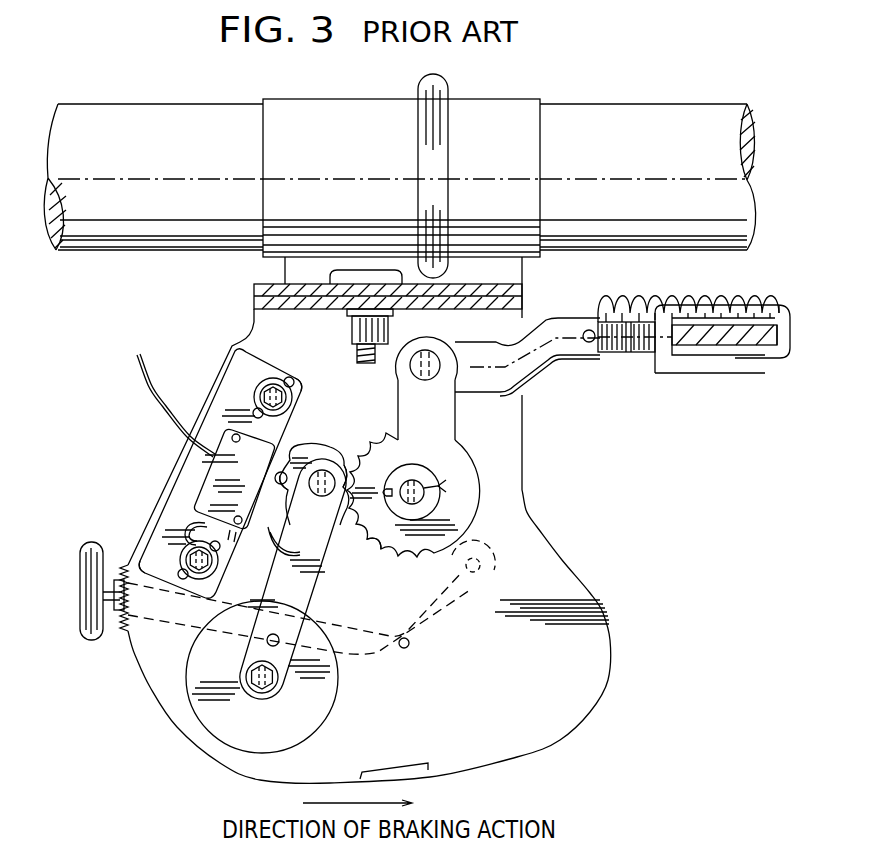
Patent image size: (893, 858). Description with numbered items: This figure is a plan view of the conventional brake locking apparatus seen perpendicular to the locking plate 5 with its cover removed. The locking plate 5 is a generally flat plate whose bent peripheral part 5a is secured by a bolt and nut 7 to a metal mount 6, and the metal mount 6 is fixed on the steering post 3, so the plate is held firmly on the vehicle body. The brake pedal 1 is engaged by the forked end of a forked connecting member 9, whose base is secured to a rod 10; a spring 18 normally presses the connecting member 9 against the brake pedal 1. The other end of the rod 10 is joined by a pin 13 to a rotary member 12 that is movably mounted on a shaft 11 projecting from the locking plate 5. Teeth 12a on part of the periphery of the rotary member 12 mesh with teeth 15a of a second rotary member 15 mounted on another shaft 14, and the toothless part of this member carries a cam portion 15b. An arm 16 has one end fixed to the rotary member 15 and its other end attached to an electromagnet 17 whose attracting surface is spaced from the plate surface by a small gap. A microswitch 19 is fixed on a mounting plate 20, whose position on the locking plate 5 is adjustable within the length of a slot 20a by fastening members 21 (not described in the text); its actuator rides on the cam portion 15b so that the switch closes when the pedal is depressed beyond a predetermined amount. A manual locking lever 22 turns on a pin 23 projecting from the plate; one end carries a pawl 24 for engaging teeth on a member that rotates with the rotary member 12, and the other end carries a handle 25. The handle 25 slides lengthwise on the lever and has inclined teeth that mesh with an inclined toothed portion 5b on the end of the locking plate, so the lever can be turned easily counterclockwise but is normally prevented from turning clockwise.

The brake pedal 1 is at (706, 345).
The steering post 3 is at (180, 113).
The locking plate 5 is at (590, 698).
The part of bent portion 5a is at (254, 303).
The serrated edge 5b is at (125, 633).
The metal mount 6 is at (507, 107).
The bolt and nut 7 is at (345, 335).
The forked connecting member 9 is at (662, 360).
The rod 10 is at (560, 332).
The shaft 11 is at (424, 494).
The rotary member 12 is at (457, 474).
The teeth 12a is at (394, 550).
The pin 13 is at (441, 365).
The shaft 14 is at (326, 497).
The rotary member 15 is at (328, 450).
The teeth 15a is at (342, 460).
The cam portion 15b is at (290, 460).
The arm 16 is at (246, 670).
The electromagnet 17 is at (318, 722).
The spring 18 is at (672, 297).
The microswitch 19 is at (212, 478).
The mounting plate 20 is at (262, 378).
The slot 20a is at (295, 390).
The bracket bolt 21 is at (262, 395).
The manual locking lever 22 is at (362, 655).
The pin 23 is at (408, 650).
The pawl 24 is at (498, 563).
The handle 25 is at (90, 628).